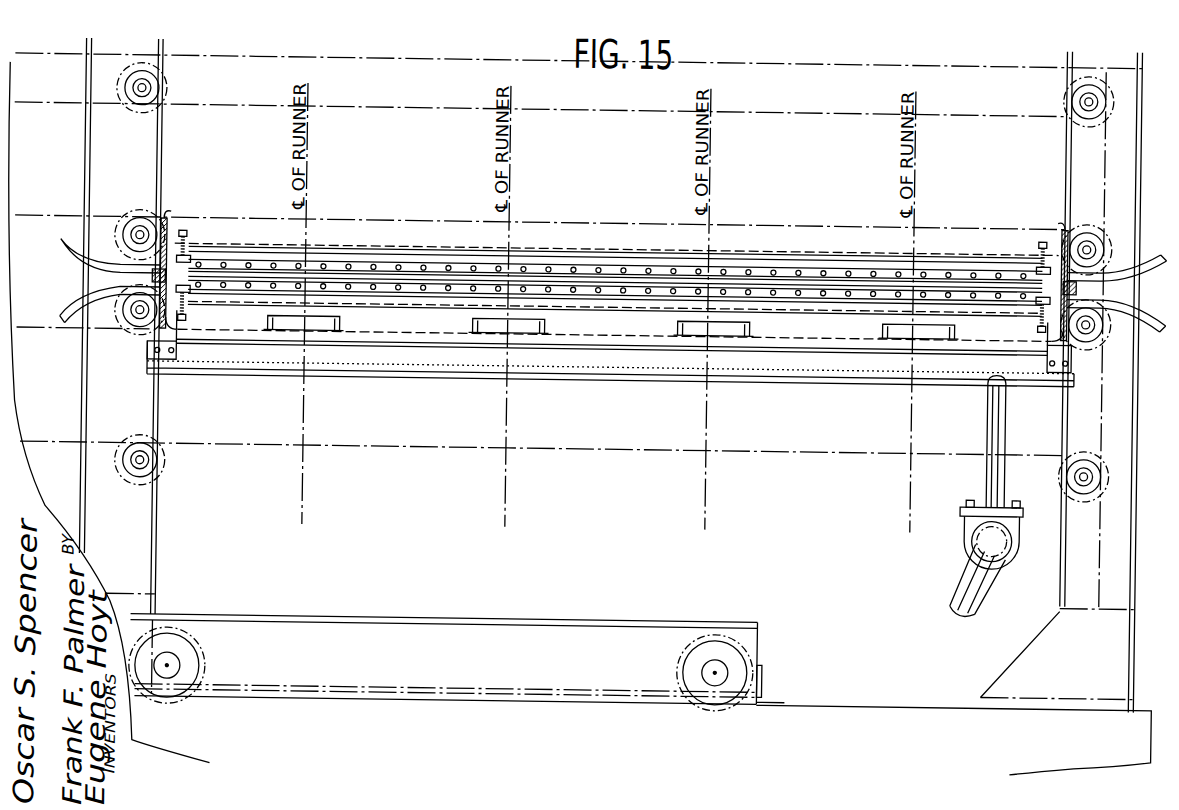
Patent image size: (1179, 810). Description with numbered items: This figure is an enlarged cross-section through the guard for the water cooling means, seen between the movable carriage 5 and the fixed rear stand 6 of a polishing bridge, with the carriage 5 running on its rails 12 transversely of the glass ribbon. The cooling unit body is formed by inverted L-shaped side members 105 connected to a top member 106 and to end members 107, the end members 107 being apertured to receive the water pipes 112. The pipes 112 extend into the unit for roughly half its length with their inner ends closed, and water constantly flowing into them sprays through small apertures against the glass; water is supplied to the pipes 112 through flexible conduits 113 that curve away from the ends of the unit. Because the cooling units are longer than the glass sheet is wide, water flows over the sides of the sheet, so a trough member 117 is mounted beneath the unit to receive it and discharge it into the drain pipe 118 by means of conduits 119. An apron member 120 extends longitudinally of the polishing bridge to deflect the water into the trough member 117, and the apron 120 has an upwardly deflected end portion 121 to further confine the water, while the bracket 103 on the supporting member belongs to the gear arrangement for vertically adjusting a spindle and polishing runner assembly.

The movable carriage 5 is at (106, 70).
The fixed rear stand 6 is at (1122, 73).
The rails 12 is at (979, 208).
The bracket 103 is at (385, 250).
The side members 105 is at (616, 268).
The top member 106 is at (557, 255).
The end members 107 is at (188, 262).
The water pipes 112 is at (120, 252).
The flexible conduits 113 is at (79, 244).
The trough member 117 is at (618, 372).
The drain pipe 118 is at (979, 535).
The conduits 119 is at (992, 429).
The apron member 120 is at (822, 343).
The upwardly deflected end portion 121 is at (162, 222).